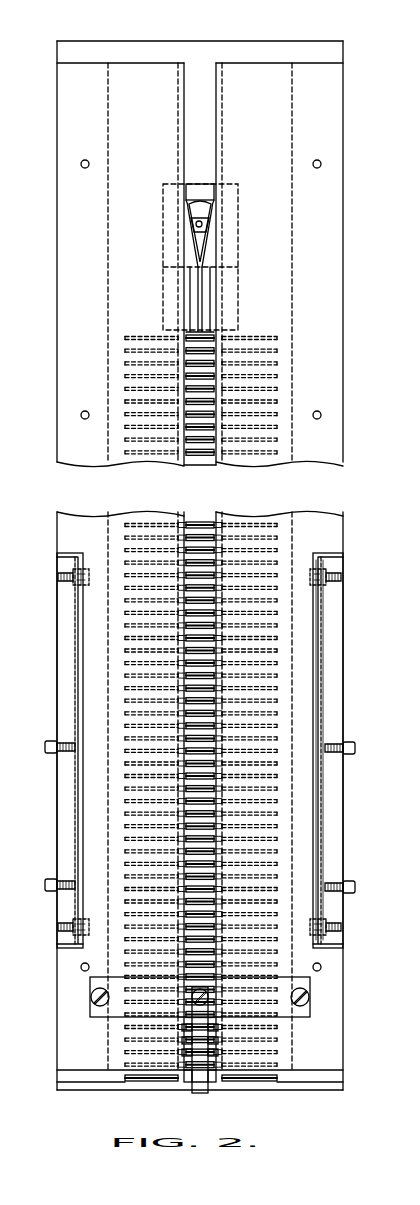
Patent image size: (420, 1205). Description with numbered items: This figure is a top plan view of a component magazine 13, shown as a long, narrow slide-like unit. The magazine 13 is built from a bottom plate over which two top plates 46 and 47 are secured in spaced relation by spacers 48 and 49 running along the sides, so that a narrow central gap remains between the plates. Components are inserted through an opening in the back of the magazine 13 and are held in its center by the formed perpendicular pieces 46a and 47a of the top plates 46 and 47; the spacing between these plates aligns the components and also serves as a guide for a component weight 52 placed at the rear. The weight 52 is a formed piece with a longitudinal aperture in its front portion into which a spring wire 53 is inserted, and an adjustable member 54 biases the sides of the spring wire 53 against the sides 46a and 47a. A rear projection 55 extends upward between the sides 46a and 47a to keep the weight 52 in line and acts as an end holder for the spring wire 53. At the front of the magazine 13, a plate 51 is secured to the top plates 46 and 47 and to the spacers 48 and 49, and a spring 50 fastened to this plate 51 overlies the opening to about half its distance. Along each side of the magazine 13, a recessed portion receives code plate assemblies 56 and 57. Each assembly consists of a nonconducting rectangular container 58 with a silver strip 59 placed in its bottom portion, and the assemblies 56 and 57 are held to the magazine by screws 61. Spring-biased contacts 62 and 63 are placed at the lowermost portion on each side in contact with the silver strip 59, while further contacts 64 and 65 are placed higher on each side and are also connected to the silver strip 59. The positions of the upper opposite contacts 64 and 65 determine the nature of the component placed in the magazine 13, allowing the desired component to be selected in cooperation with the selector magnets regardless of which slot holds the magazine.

The magazine 13 is at (343, 537).
The top plate 46 is at (300, 1042).
The top plate 47 is at (110, 1040).
The perpendicular piece 46a is at (218, 62).
The perpendicular piece 47a is at (186, 62).
The spacer 48 is at (343, 446).
The spacer 49 is at (57, 444).
The spring 50 is at (206, 1074).
The plate 51 is at (311, 990).
The component weight 52 is at (216, 280).
The spring wire 53 is at (208, 246).
The adjustable member 54 is at (206, 216).
The rear projection 55 is at (207, 184).
The code plate assembly 56 is at (343, 775).
The code plate assembly 57 is at (57, 773).
The nonconducting rectangular container 58 is at (332, 655).
The silver strip 59 is at (318, 612).
The screws 61 is at (336, 580).
The spring-biased contact 62 is at (351, 884).
The spring-biased contact 63 is at (47, 882).
The contact 64 is at (353, 745).
The contact 65 is at (47, 744).